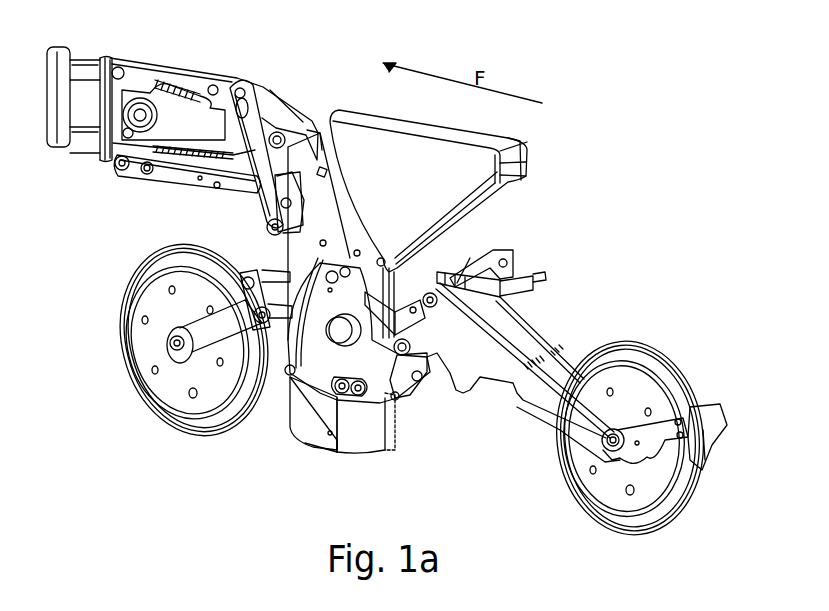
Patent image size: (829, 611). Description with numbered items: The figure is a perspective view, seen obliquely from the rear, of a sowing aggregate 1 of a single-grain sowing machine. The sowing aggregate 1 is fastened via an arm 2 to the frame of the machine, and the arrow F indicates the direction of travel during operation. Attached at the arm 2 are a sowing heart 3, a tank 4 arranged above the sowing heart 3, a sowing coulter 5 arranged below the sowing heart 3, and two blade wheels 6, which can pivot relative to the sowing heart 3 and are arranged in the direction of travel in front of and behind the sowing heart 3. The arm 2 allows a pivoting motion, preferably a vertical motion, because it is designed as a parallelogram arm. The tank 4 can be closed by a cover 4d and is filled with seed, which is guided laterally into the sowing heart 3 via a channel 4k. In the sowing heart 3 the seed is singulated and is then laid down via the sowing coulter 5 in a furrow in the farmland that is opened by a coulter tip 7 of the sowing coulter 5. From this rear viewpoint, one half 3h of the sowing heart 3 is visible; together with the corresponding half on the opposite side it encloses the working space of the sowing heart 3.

The sowing aggregate 1 is at (628, 216).
The arm 2 is at (119, 194).
The sowing heart 3 is at (350, 372).
The half of the sowing heart 3h is at (402, 393).
The tank 4 is at (400, 198).
The cover 4d is at (500, 140).
The channel 4k is at (462, 250).
The sowing coulter 5 is at (328, 418).
The blade wheels 6 is at (150, 353).
The coulter tip 7 is at (303, 420).